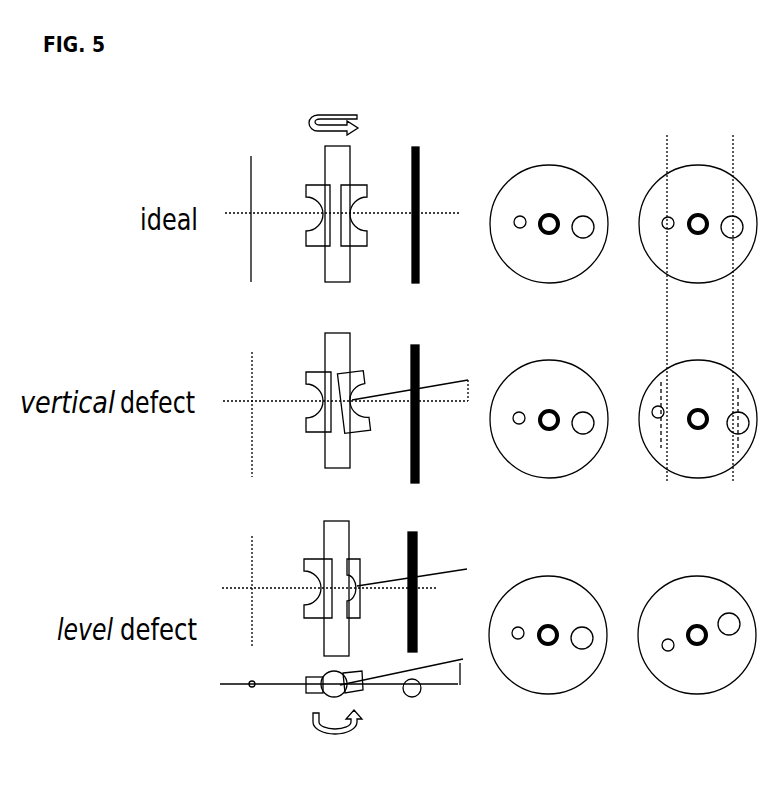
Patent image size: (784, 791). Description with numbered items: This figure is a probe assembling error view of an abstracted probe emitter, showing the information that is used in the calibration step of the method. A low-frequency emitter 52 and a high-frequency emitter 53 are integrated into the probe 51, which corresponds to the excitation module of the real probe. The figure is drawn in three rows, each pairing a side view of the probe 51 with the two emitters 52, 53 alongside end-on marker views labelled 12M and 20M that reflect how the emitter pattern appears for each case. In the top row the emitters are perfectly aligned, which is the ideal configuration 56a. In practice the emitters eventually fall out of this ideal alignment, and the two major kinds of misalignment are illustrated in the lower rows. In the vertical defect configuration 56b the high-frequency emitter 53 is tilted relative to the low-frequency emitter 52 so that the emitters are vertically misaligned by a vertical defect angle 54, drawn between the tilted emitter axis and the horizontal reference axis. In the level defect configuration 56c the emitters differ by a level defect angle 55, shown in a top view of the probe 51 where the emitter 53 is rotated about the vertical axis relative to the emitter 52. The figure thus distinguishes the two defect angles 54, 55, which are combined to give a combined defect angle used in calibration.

The probe 51 is at (325, 162).
The low-frequency emitter 52 is at (308, 186).
The high-frequency emitter 53 is at (367, 185).
The vertical defect angle 54 is at (424, 371).
The level defect angle 55 is at (412, 694).
The ideal configuration 56a is at (247, 188).
The vertical defect configuration 56b is at (250, 427).
The level defect configuration 56c is at (250, 608).
The first marker pattern view 12M is at (285, 273).
The second marker pattern view 20M is at (367, 246).